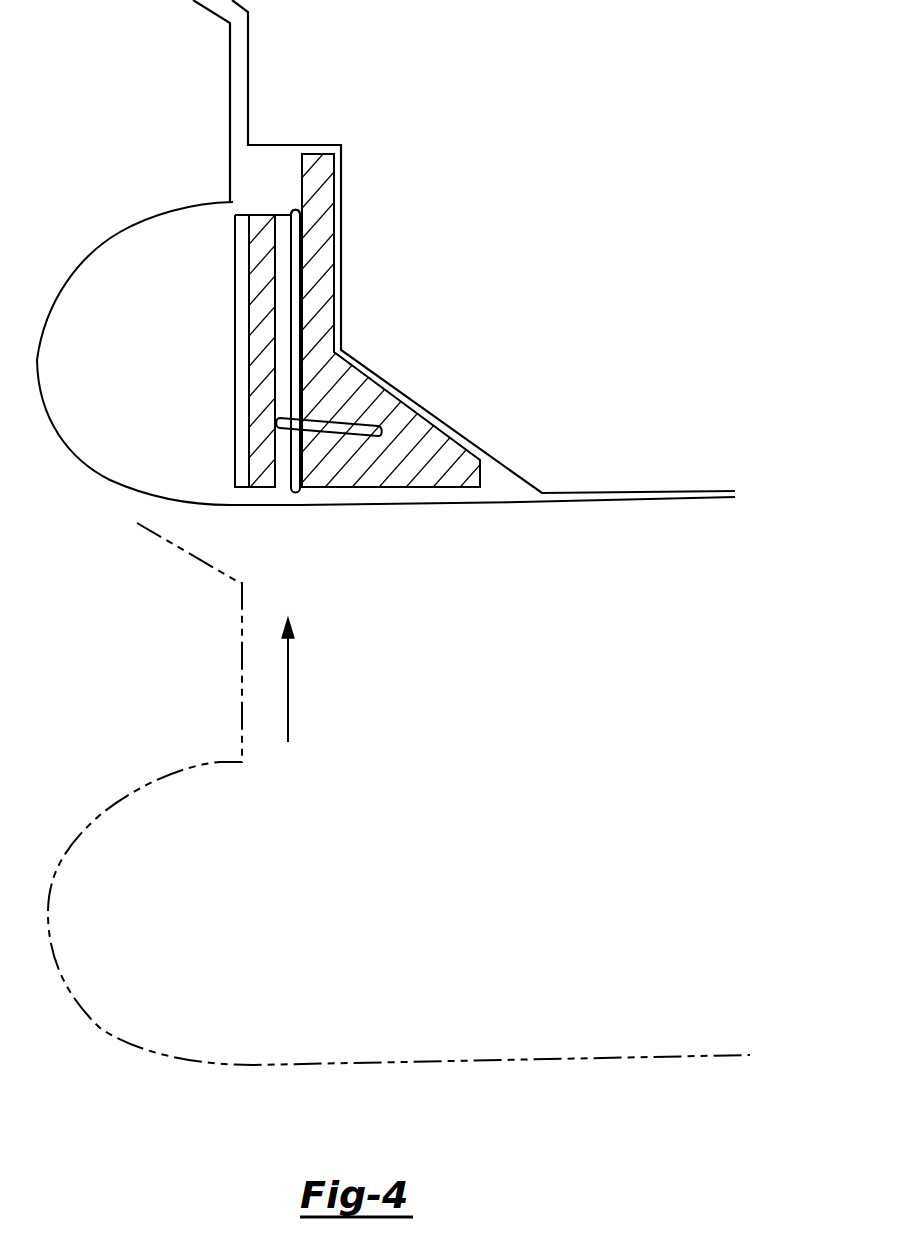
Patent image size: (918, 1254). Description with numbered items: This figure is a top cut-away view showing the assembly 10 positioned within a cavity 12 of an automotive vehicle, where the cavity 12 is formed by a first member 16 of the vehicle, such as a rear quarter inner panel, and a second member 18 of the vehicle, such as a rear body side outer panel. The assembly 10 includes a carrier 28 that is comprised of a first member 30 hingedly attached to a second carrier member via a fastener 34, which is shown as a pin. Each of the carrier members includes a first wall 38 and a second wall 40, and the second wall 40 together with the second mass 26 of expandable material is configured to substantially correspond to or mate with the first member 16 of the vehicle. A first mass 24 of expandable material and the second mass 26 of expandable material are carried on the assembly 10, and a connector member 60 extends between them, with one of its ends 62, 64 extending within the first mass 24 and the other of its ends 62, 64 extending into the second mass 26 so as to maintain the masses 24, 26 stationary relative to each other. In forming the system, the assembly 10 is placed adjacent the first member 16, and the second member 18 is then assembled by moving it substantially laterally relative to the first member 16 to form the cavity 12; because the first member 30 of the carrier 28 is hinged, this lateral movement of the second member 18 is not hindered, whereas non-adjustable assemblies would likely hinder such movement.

The assembly 10 is at (272, 168).
The cavity 12 is at (153, 255).
The first member 16 is at (517, 473).
The second member 18 is at (50, 295).
The first mass of expandable material 24 is at (258, 330).
The second mass of expandable material 26 is at (322, 228).
The carrier 28 is at (298, 530).
The first member 30 is at (238, 277).
The fastener 34 is at (300, 207).
The first wall 38 is at (288, 473).
The second wall 40 is at (243, 426).
The connector member 60 is at (327, 420).
The end of connector member 62 is at (281, 418).
The end of connector member 64 is at (376, 418).